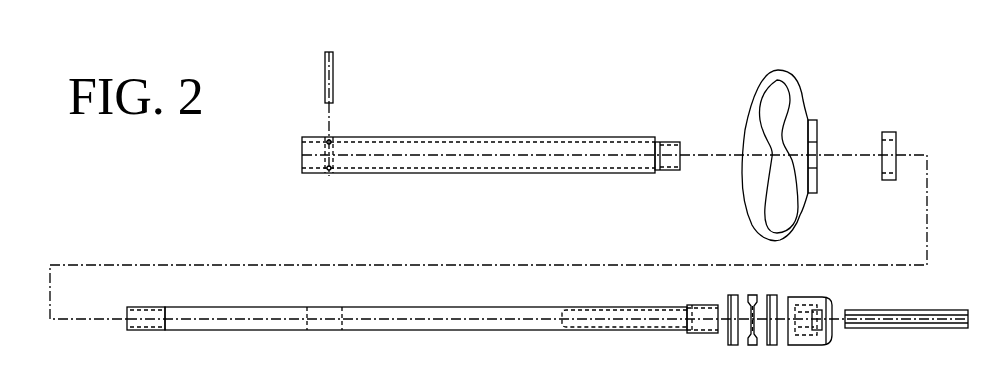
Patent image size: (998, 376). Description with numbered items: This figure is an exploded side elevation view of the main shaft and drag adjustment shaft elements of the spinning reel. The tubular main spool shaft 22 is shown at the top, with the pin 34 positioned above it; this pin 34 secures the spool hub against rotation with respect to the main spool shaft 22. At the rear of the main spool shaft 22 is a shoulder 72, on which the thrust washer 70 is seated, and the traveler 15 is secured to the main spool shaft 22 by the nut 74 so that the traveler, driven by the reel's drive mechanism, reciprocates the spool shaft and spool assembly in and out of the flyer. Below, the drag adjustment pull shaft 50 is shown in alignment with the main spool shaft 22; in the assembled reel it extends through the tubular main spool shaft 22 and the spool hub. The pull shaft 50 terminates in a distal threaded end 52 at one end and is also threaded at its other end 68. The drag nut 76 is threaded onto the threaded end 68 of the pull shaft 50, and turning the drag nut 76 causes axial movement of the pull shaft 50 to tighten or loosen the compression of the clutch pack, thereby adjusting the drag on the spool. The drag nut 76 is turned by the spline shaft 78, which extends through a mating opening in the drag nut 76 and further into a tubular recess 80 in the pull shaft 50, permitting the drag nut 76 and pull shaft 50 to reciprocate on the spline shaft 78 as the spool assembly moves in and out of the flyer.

The traveler 15 is at (795, 74).
The main spool shaft 22 is at (468, 135).
The pin 34 is at (334, 80).
The drag adjustment pull shaft 50 is at (400, 306).
The distal threaded end 52 is at (148, 306).
The threaded end 68 is at (701, 304).
The thrust washer 70 is at (723, 297).
The shoulder 72 is at (657, 137).
The nut 74 is at (889, 131).
The drag nut 76 is at (818, 296).
The spline shaft 78 is at (900, 328).
The tubular recess 80 is at (598, 318).